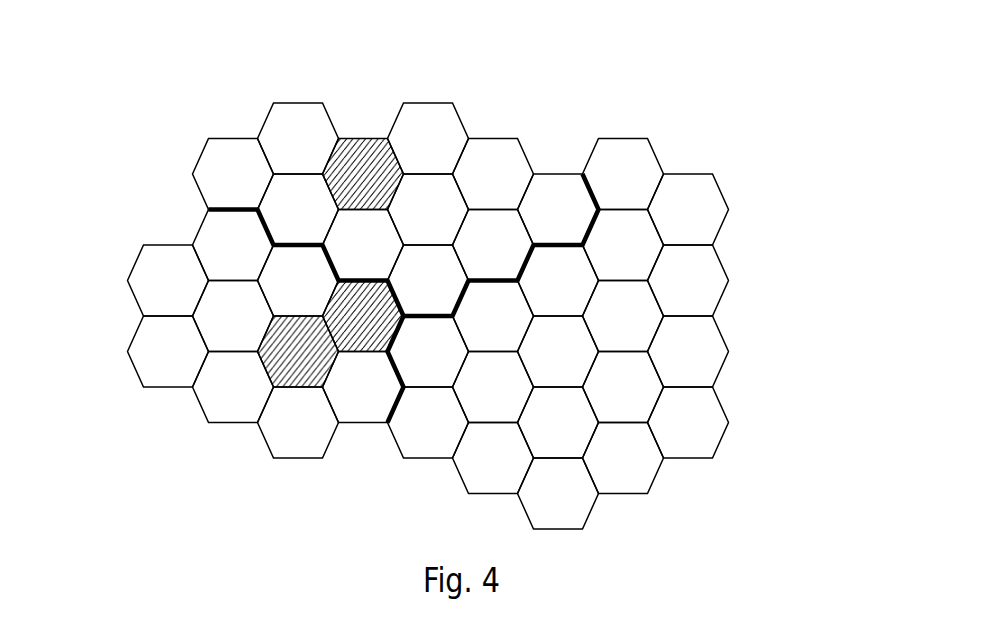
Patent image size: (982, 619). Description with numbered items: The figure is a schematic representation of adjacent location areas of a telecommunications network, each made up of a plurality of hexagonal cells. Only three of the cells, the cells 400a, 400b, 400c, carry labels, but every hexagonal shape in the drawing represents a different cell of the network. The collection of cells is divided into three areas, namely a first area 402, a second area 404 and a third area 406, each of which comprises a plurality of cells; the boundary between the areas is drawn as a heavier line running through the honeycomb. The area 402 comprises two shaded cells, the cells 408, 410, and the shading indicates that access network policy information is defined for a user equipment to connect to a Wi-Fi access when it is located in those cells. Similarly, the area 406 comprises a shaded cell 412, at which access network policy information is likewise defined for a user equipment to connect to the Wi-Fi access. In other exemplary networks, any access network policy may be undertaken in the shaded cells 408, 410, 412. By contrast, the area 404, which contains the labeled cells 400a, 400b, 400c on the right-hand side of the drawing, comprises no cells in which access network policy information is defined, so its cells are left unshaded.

The area 402 is at (118, 254).
The area 404 is at (745, 381).
The area 406 is at (343, 95).
The cell 408 is at (307, 367).
The cell 410 is at (365, 313).
The cell 412 is at (376, 164).
The cell 400a is at (630, 158).
The cell 400b is at (698, 207).
The cell 400c is at (698, 275).